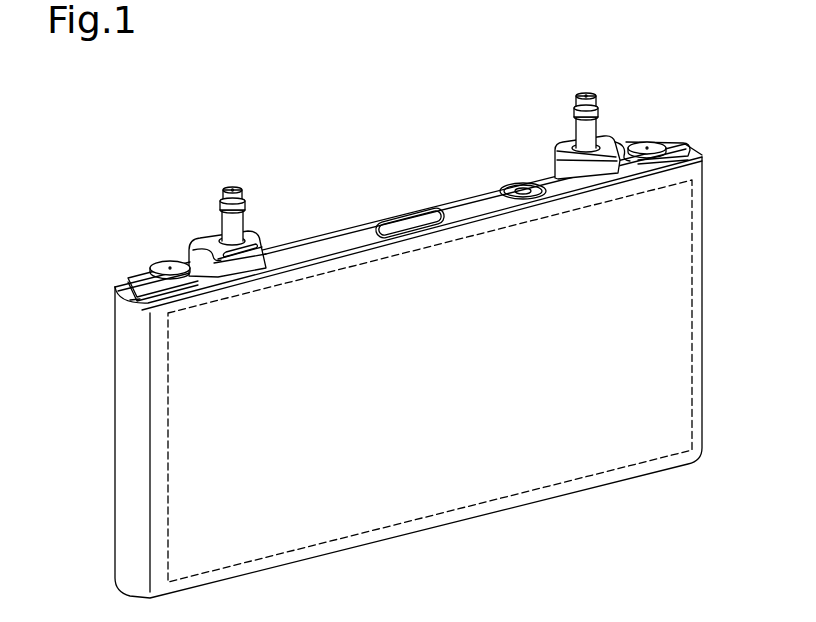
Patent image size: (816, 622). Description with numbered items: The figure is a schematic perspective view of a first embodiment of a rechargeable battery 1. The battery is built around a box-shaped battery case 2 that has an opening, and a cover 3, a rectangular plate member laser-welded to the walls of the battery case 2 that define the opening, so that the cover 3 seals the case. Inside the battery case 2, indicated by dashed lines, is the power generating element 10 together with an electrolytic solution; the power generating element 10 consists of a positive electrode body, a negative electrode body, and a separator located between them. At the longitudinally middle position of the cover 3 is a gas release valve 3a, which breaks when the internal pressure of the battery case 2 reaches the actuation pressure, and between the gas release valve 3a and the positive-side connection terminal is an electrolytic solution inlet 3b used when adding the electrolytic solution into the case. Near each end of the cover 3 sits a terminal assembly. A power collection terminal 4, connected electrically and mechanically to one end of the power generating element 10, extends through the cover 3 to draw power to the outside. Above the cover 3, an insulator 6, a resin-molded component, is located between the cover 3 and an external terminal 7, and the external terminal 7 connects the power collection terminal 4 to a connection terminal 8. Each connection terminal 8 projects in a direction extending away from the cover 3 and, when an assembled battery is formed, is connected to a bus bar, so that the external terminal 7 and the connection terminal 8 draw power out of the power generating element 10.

The rechargeable battery 1 is at (183, 149).
The battery case 2 is at (704, 266).
The cover 3 is at (330, 238).
The gas release valve 3a is at (406, 216).
The electrolytic solution inlet 3b is at (515, 186).
The power collection terminal 4 is at (166, 263).
The insulator 6 is at (243, 266).
The external terminal 7 is at (205, 238).
The connection terminal 8 is at (231, 186).
The power generating element 10 is at (693, 216).